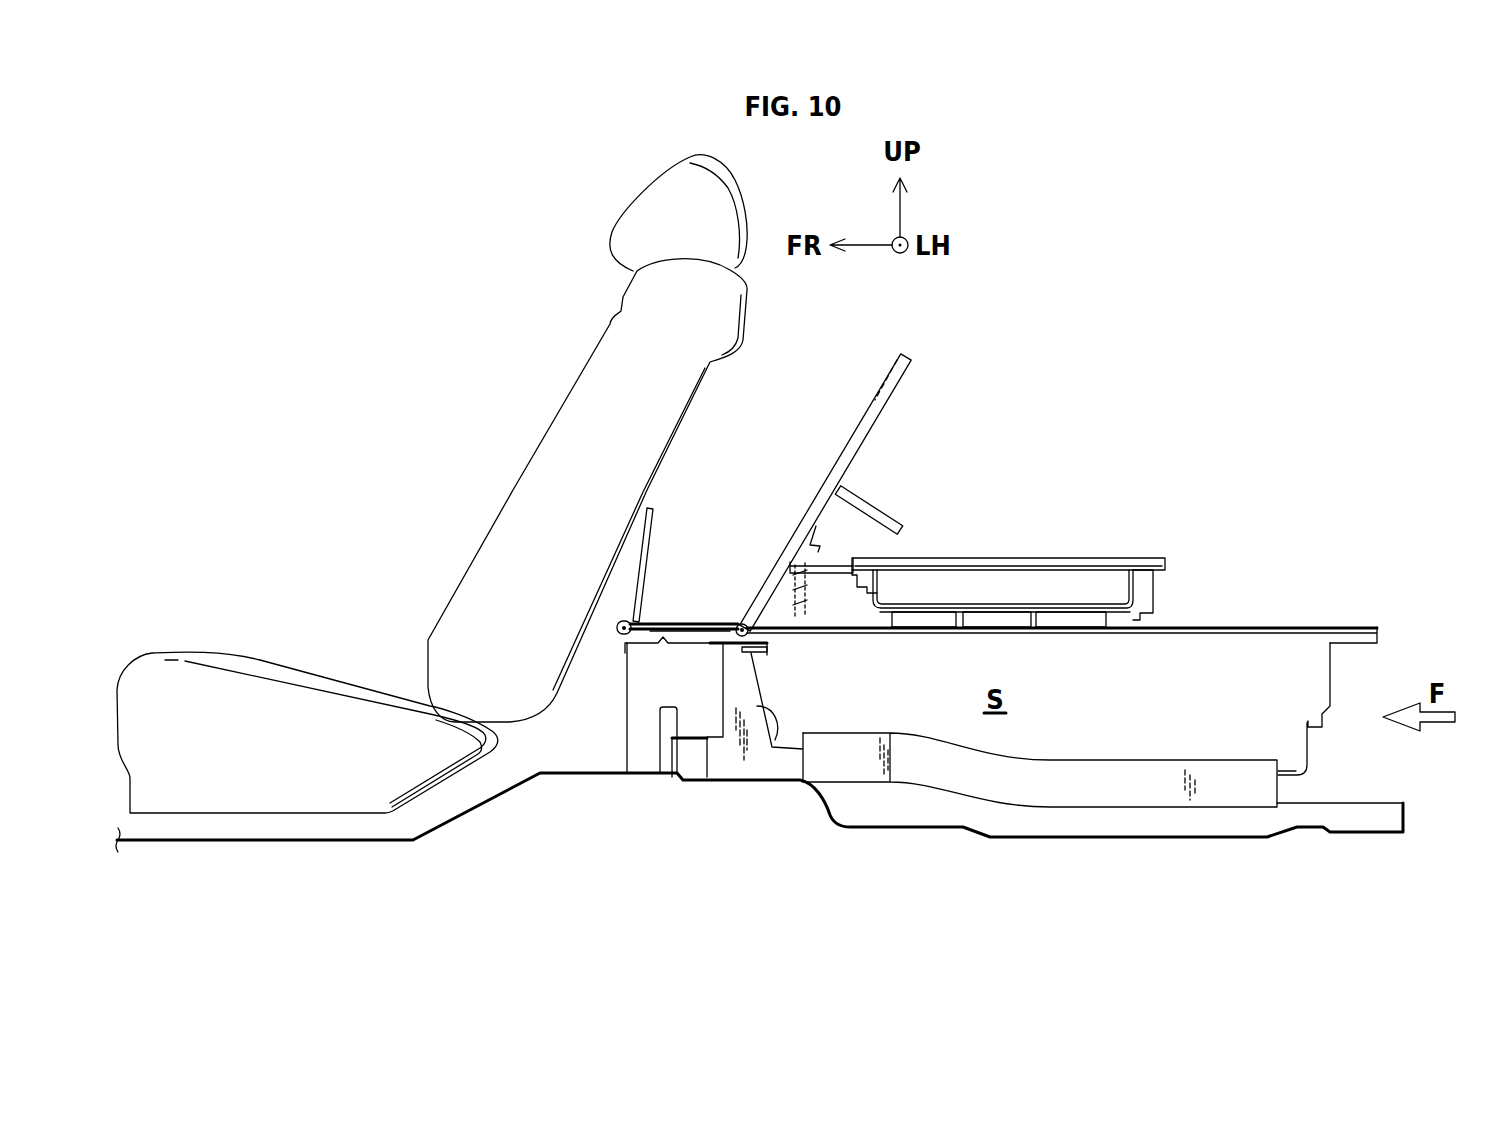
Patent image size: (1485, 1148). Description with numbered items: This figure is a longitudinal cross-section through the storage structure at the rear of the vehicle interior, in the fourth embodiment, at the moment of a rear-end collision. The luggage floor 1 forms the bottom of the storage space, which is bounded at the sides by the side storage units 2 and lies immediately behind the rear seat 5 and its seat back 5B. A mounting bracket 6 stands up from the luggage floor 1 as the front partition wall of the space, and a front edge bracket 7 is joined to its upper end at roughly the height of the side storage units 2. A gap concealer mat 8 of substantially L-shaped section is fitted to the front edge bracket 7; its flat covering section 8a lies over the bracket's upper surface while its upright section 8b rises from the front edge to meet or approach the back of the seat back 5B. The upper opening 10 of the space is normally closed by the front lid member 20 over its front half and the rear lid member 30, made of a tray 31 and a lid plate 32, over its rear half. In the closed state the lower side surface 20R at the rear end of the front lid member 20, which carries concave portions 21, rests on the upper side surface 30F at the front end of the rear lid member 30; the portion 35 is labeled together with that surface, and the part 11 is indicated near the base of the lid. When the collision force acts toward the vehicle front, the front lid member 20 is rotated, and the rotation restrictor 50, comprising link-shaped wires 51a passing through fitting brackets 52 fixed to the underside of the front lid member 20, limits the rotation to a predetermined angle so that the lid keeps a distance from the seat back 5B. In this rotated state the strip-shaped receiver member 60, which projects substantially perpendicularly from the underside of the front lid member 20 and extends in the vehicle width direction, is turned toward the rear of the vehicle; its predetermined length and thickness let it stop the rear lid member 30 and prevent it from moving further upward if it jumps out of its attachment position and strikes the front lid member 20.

The luggage floor 1 is at (1072, 835).
The side storage unit 2 is at (1325, 683).
The rear seat 5 is at (305, 548).
The seat back 5B is at (547, 480).
The mounting bracket 6 is at (760, 707).
The front edge bracket 7 is at (640, 644).
The gap concealer mat 8 is at (758, 482).
The covering section 8a is at (680, 620).
The upright section 8b is at (648, 570).
The upper opening 10 is at (1180, 628).
The pivot 11 is at (740, 620).
The front lid member 20 is at (903, 485).
The lower side surface 20R is at (970, 370).
The concave portion 21 is at (890, 385).
The rear lid member 30 is at (1051, 527).
The upper side surface 30F is at (830, 560).
The front wall 35 is at (906, 539).
The tray 31 is at (1135, 593).
The lid plate 32 is at (1088, 557).
The rotation restrictor 50 is at (785, 636).
The wire 51a is at (797, 553).
The fitting bracket 52 is at (822, 531).
The receiver member 60 is at (873, 497).